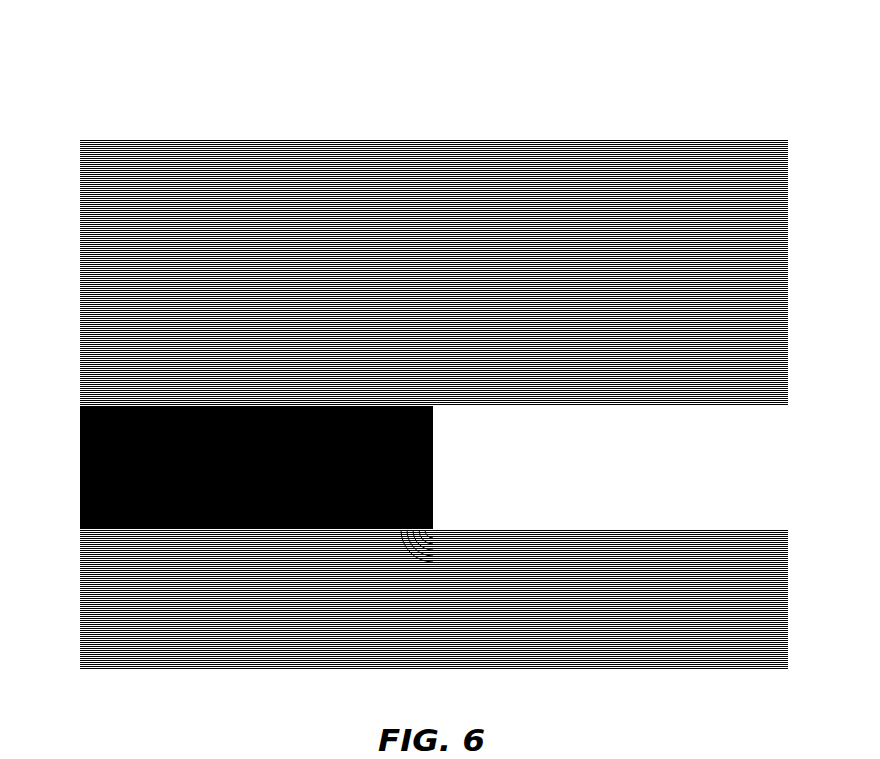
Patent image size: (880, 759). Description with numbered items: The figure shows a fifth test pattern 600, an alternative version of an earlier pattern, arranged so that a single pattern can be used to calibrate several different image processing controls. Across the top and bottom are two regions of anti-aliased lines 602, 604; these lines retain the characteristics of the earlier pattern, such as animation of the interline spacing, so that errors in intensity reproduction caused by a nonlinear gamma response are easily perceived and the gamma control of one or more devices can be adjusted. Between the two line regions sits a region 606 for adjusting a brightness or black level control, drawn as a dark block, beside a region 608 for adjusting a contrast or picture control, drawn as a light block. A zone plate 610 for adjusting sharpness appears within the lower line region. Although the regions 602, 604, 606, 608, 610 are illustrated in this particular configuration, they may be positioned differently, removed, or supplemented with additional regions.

The test pattern 600 is at (808, 100).
The region of anti-aliased lines 602 is at (790, 132).
The region of anti-aliased lines 604 is at (790, 522).
The region for adjusting a brightness control 606 is at (60, 398).
The region for adjusting a contrast control 608 is at (790, 398).
The zone plate 610 is at (390, 590).